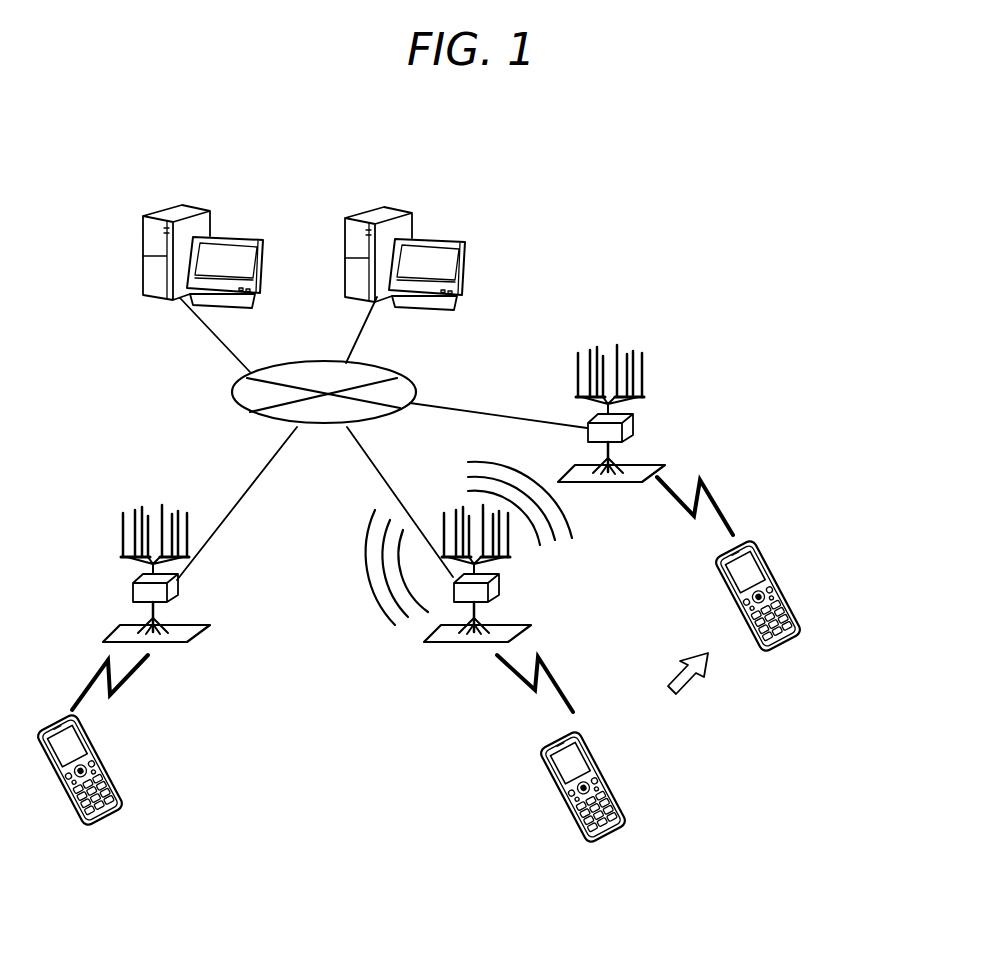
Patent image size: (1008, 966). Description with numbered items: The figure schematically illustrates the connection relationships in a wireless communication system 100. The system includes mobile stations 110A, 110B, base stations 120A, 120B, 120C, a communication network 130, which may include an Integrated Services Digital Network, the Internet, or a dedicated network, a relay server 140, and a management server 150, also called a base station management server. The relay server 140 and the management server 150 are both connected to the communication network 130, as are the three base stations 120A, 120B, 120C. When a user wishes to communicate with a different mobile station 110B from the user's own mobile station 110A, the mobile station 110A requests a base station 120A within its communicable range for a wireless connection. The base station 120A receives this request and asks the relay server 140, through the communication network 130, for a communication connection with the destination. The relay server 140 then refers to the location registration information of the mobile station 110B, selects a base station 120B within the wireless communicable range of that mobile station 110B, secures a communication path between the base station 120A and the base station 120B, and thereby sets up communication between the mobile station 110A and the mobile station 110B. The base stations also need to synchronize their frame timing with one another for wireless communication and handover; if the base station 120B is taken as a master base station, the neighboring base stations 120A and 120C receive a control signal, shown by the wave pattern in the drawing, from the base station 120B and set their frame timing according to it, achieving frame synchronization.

The wireless communication system 100 is at (618, 222).
The mobile station 110A is at (108, 765).
The mobile station 110B is at (782, 583).
The base station 120A is at (178, 588).
The base station 120B is at (499, 588).
The base station 120C is at (633, 428).
The communication network 130 is at (232, 392).
The relay server 140 is at (200, 203).
The management server 150 is at (402, 205).